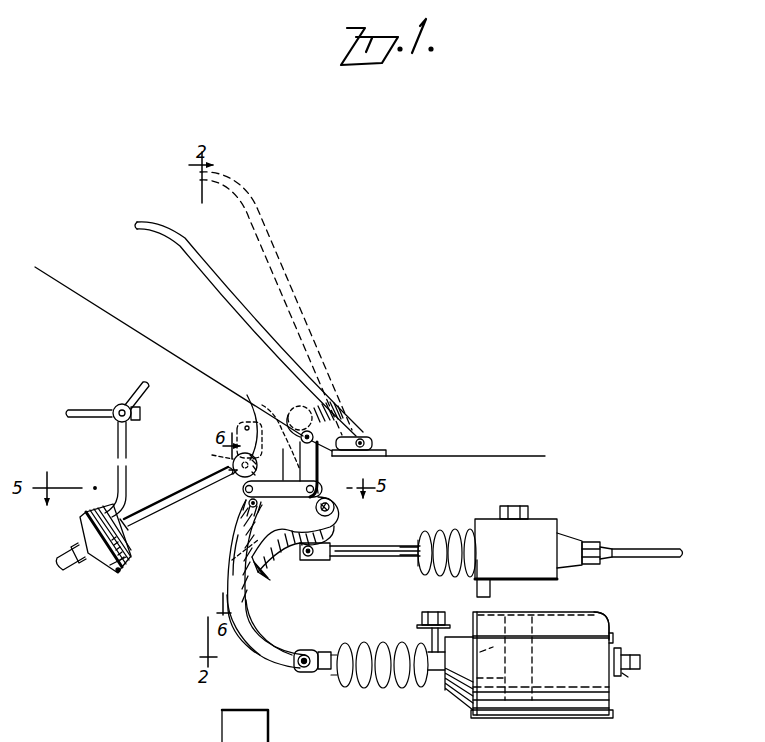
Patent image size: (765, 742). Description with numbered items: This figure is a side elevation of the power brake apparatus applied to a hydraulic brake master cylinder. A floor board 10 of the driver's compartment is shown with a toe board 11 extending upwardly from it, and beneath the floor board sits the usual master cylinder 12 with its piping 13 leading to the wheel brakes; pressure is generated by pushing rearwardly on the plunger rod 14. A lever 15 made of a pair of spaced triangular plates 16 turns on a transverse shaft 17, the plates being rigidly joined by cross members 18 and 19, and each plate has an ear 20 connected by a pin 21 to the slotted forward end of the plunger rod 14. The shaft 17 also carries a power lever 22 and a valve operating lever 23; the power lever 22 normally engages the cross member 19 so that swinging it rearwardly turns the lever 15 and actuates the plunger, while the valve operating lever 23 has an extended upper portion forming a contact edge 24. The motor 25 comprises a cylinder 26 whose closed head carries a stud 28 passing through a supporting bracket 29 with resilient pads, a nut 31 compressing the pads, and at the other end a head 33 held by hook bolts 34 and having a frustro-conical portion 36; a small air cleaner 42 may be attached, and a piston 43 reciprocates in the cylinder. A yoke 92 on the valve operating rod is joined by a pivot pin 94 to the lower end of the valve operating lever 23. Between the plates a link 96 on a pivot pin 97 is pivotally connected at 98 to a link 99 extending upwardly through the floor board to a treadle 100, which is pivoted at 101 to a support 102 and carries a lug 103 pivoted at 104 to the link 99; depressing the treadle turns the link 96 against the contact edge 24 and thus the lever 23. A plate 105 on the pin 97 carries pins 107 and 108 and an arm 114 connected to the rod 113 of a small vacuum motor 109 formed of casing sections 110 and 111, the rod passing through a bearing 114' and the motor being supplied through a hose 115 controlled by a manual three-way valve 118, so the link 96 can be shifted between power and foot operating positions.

The floor board 10 is at (469, 456).
The toe board 11 is at (181, 329).
The master cylinder 12 is at (541, 518).
The piping 13 is at (631, 548).
The plunger rod 14 is at (380, 546).
The lever 15 is at (333, 488).
The triangular plates 16 is at (244, 510).
The transverse shaft 17 is at (336, 508).
The cross member 18 is at (222, 459).
The cross member 19 is at (266, 566).
The ear 20 is at (312, 558).
The pin 21 is at (330, 558).
The power lever 22 is at (252, 645).
The valve operating lever 23 is at (274, 647).
The contact edge 24 is at (257, 548).
The motor 25 is at (530, 717).
The cylinder 26 is at (607, 620).
The stud 28 is at (641, 662).
The supporting bracket 29 is at (622, 650).
The nut 31 is at (626, 673).
The head 33 is at (477, 626).
The hook bolts 34 is at (580, 637).
The frustro-conical portion 36 is at (455, 697).
The air cleaner 42 is at (428, 612).
The piston 43 is at (532, 678).
The yoke 92 is at (323, 652).
The pivot pin 94 is at (305, 652).
The link 96 is at (248, 426).
The pivot pin 97 is at (246, 497).
The pivotal connection 98 is at (320, 486).
The link 99 is at (300, 414).
The treadle 100 is at (290, 357).
The pivot 101 is at (372, 440).
The support 102 is at (390, 453).
The lug 103 is at (355, 418).
The pivot 104 is at (312, 413).
The plate 105 is at (240, 505).
The pin 107 is at (240, 418).
The pin 108 is at (238, 534).
The vacuum motor 109 is at (118, 577).
The casing section 110 is at (126, 556).
The casing section 111 is at (92, 574).
The rod 113 is at (168, 494).
The arm 114 is at (214, 488).
The bearing 114' is at (146, 530).
The hose 115 is at (117, 447).
The three-way valve 118 is at (140, 414).